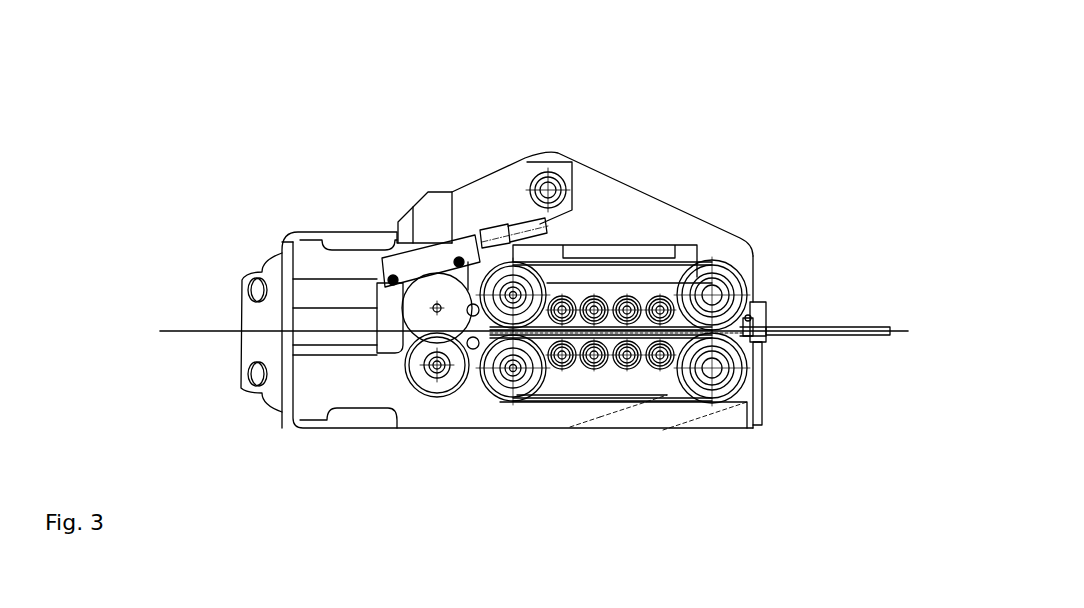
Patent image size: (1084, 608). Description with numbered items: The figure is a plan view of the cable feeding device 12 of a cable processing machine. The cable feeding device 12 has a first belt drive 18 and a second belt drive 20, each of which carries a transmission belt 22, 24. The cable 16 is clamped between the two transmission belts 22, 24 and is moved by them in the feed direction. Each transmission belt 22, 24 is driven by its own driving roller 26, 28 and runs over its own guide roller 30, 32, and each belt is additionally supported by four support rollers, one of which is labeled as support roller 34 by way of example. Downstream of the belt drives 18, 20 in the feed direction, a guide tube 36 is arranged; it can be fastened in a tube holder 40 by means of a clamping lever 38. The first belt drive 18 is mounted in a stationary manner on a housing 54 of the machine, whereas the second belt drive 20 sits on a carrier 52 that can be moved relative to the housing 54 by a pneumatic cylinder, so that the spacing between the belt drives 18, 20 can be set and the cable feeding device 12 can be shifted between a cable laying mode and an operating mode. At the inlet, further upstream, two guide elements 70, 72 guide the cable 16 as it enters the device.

The cable feeding device 12 is at (452, 96).
The cable 16 is at (899, 331).
The first belt drive 18 is at (628, 414).
The second belt drive 20 is at (758, 229).
The transmission belt 22 is at (670, 398).
The transmission belt 24 is at (617, 262).
The driving roller 26 is at (513, 383).
The driving roller 28 is at (513, 293).
The guide roller 30 is at (713, 377).
The guide roller 32 is at (720, 295).
The support roller 34 is at (633, 362).
The guide tube 36 is at (832, 331).
The clamping lever 38 is at (762, 404).
The tube holder 40 is at (778, 314).
The carrier 52 is at (642, 292).
The housing 54 is at (604, 188).
The guide element 70 is at (398, 350).
The guide element 72 is at (386, 298).